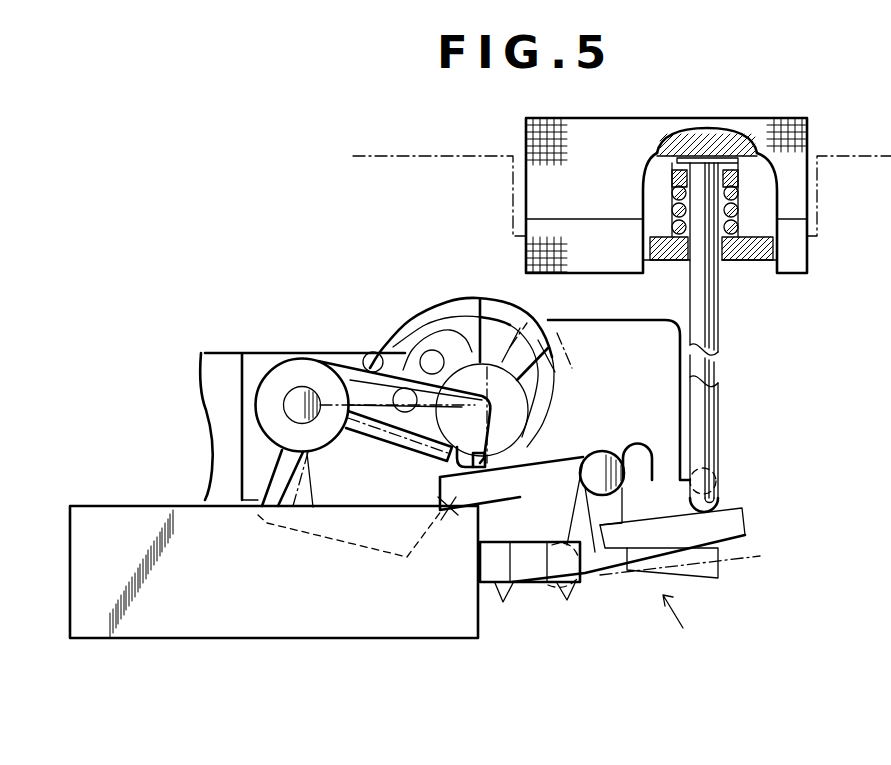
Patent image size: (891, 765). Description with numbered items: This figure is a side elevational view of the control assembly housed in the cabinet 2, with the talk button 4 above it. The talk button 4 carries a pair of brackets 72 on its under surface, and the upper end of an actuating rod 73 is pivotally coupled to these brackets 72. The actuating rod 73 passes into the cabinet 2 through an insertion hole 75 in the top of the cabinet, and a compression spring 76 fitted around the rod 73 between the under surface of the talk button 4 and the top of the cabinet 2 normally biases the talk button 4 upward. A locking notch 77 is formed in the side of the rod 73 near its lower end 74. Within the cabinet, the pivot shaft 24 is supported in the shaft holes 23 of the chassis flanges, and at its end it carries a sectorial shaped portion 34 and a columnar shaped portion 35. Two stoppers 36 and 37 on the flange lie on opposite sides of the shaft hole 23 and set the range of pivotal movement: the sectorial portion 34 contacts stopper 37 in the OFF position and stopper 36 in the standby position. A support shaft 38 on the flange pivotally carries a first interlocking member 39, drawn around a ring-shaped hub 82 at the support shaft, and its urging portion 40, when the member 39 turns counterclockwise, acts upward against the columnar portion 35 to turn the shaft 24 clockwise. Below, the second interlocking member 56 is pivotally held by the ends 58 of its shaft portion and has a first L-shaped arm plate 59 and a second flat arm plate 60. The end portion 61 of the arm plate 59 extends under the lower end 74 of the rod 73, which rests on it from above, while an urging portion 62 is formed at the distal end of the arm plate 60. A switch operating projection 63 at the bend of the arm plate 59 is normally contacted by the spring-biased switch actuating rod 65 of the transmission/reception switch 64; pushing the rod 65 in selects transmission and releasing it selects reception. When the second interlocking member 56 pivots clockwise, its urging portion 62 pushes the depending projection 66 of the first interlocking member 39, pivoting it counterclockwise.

The cabinet 2 is at (445, 156).
The talk button 4 is at (702, 118).
The shaft holes 23 is at (553, 425).
The pivot shaft 24 is at (458, 355).
The sectorial shaped portion 34 is at (538, 348).
The columnar shaped portion 35 is at (378, 352).
The stopper 36 is at (484, 306).
The stopper 37 is at (590, 452).
The support shaft 38 is at (284, 412).
The first interlocking member 39 is at (335, 364).
The urging portion 40 is at (412, 432).
The second interlocking member 56 is at (689, 626).
The ends of shaft portion 58 is at (630, 452).
The first L-shaped arm plate 59 is at (718, 550).
The second arm plate 60 is at (473, 510).
The end portion 61 is at (630, 525).
The urging portion 62 is at (528, 468).
The switch operating projection 63 is at (563, 586).
The transmission/reception switch 64 is at (404, 628).
The switch actuating rod 65 is at (530, 586).
The depending projection 66 is at (455, 458).
The brackets 72 is at (672, 178).
The actuating rod 73 is at (714, 420).
The lower end 74 is at (722, 508).
The insertion hole 75 is at (690, 250).
The compression spring 76 is at (738, 210).
The locking notch 77 is at (718, 480).
The pivot bushing 82 is at (284, 372).